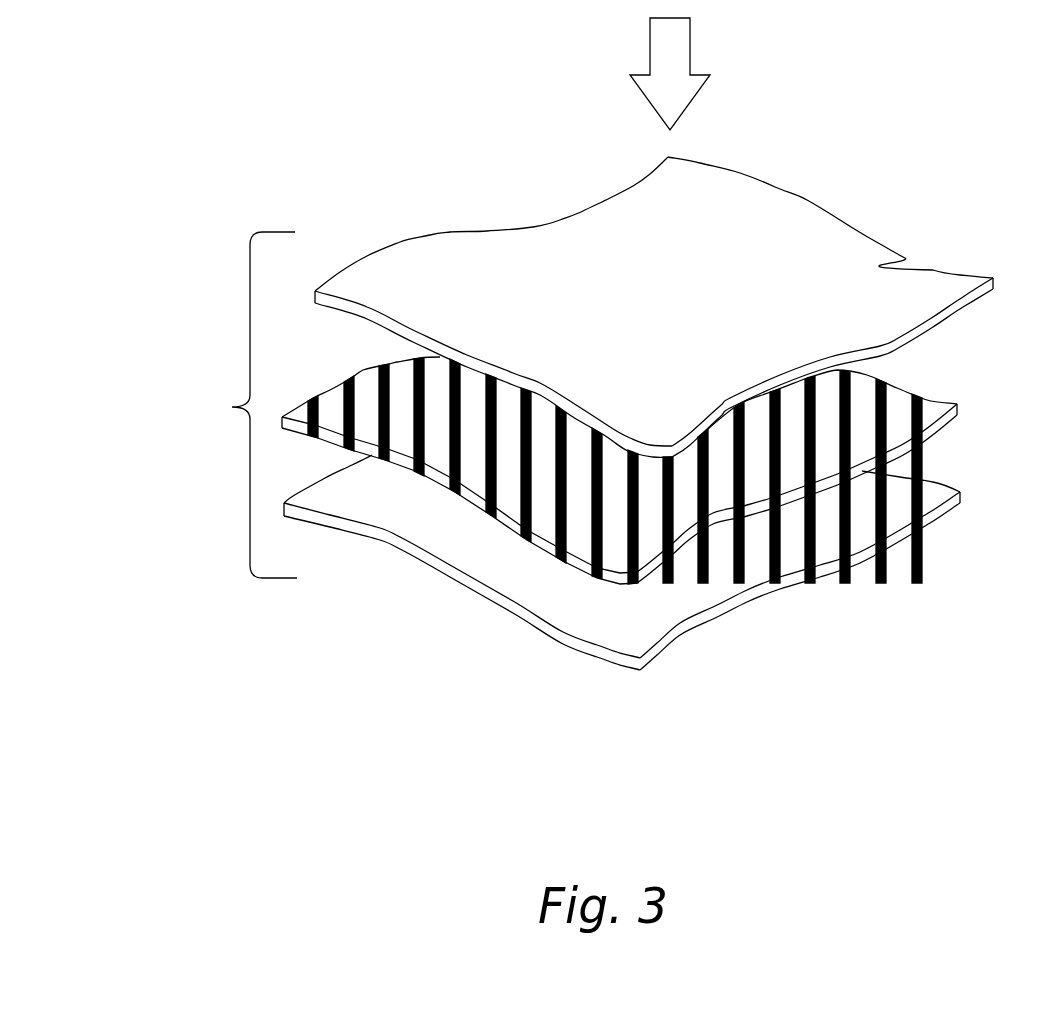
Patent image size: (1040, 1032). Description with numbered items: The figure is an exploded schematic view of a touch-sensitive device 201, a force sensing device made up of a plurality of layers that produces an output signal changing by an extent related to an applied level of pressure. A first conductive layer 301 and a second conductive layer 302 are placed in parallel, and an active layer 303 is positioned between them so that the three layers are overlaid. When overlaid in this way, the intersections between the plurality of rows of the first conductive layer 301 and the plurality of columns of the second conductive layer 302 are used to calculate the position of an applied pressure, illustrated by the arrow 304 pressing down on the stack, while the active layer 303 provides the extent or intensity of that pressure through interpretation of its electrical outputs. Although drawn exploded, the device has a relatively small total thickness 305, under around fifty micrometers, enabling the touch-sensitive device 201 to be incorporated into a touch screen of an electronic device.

The touch-sensitive device 201 is at (637, 361).
The first conductive layer 301 is at (935, 276).
The second conductive layer 302 is at (935, 496).
The active layer 303 is at (935, 408).
The arrow 304 is at (657, 45).
The thickness 305 is at (238, 405).